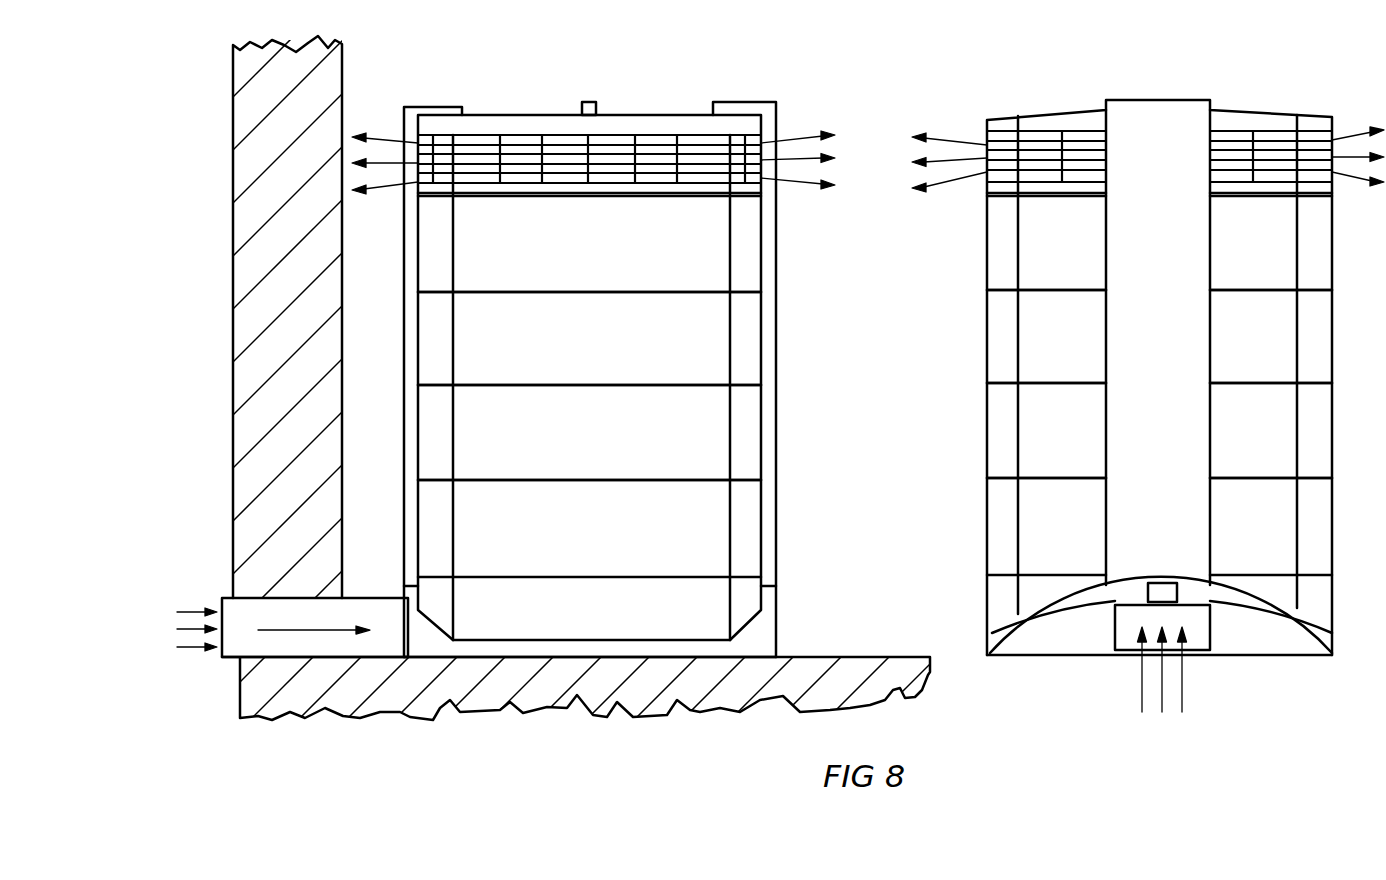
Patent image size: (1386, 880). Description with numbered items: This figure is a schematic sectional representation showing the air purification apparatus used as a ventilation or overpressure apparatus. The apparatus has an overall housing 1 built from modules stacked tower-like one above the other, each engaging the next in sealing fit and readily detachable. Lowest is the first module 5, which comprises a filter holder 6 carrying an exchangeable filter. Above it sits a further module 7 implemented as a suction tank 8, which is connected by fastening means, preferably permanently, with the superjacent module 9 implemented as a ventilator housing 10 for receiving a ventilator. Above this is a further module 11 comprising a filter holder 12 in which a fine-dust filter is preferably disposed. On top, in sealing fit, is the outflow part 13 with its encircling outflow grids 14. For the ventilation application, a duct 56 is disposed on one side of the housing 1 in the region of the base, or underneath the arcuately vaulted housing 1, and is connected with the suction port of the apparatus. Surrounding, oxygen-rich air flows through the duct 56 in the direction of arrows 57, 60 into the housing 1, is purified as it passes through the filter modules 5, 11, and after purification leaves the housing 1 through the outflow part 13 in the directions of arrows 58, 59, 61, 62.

The overall housing 1 is at (987, 452).
The first module 5 is at (697, 560).
The filter holder 6 is at (1050, 543).
The further module 7 is at (700, 430).
The suction tank 8 is at (1057, 417).
The superjacent module 9 is at (693, 345).
The ventilator housing 10 is at (1048, 332).
The further module 11 is at (692, 270).
The filter holder 12 is at (1055, 267).
The outflow part 13 is at (648, 160).
The outflow grids 14 is at (843, 110).
The duct 56 is at (382, 638).
The arrow 57 is at (187, 653).
The arrow 58 is at (790, 130).
The arrow 59 is at (381, 133).
The arrow 60 is at (1162, 691).
The arrow 61 is at (1358, 127).
The arrow 62 is at (955, 130).